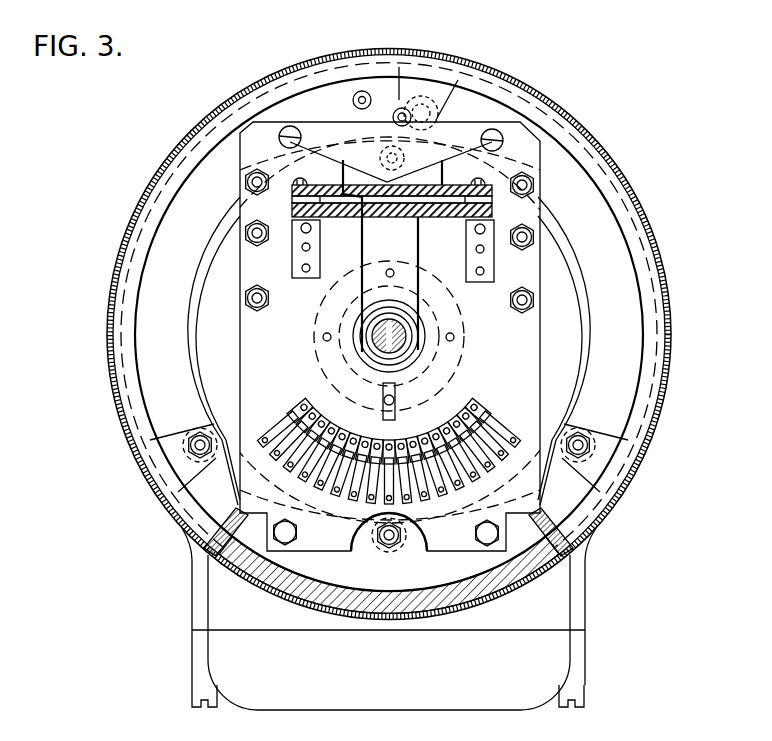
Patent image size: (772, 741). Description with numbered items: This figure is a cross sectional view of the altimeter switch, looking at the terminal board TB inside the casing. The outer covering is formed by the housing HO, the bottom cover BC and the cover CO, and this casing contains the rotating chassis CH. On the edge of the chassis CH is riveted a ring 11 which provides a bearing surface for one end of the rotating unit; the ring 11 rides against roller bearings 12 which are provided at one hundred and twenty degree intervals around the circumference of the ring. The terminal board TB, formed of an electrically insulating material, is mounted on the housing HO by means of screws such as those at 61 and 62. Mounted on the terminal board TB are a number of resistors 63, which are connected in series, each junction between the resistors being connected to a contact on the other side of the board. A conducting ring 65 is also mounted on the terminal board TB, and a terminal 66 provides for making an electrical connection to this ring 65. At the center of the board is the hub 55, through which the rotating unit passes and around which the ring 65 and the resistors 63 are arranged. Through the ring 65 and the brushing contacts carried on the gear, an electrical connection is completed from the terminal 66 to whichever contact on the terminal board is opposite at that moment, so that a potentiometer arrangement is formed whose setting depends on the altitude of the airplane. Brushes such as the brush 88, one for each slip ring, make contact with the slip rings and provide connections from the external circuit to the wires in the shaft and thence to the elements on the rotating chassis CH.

The roller bearings 12 is at (437, 110).
The screw 62 is at (281, 142).
The brush 88 is at (419, 238).
The ring 11 is at (585, 314).
The terminal board TB is at (541, 341).
The chassis CH is at (567, 379).
The conducting ring 65 is at (456, 347).
The shaft hub 55 is at (405, 362).
The terminal 66 is at (395, 412).
The resistors 63 is at (488, 435).
The screw 61 is at (290, 542).
The cover CO is at (618, 490).
The housing HO is at (345, 602).
The bottom cover BC is at (503, 712).